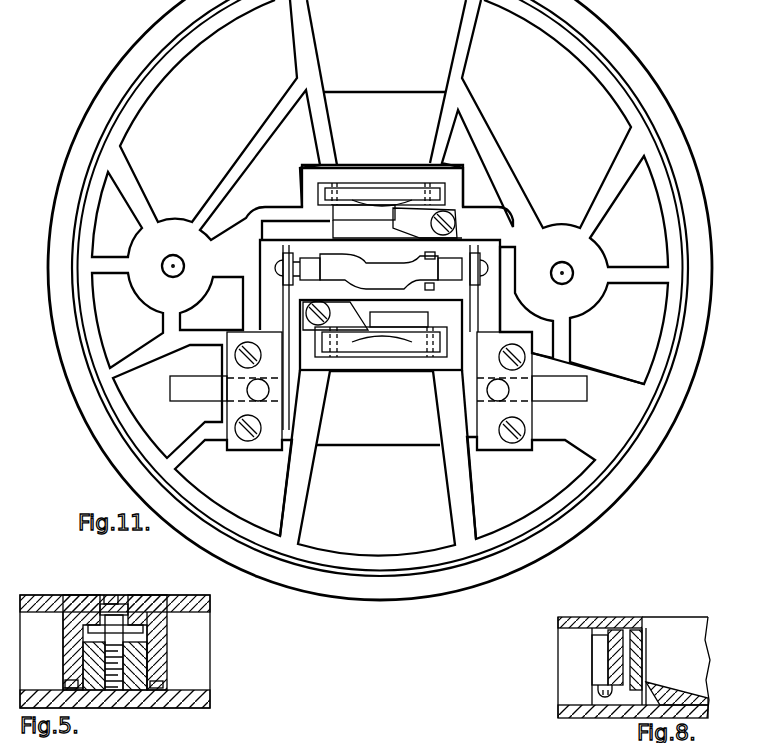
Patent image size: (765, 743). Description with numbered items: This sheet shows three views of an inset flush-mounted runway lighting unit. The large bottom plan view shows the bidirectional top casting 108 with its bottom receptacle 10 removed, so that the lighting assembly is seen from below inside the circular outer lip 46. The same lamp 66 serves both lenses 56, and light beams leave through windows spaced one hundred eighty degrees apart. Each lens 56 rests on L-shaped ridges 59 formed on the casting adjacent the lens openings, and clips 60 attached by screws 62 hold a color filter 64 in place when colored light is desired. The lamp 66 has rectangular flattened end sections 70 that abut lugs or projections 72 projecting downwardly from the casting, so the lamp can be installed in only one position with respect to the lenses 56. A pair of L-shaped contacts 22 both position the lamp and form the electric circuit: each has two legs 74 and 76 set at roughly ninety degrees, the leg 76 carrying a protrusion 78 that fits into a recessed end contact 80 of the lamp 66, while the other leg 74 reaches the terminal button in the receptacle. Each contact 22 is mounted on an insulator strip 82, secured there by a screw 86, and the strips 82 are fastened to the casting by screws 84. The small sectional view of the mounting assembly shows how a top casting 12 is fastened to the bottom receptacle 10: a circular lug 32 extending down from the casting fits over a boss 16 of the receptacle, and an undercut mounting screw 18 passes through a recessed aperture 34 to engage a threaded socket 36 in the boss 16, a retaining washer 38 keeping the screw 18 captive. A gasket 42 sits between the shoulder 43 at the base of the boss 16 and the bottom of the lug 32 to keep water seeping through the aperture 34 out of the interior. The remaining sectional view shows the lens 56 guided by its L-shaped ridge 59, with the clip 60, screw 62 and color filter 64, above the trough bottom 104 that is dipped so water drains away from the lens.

In FIG. 5, the bottom receptacle 10 is at (153, 697).
In FIG. 8, the bottom receptacle 10 is at (617, 716).
In FIG. 5, the top casting 12 is at (60, 594).
In FIG. 8, the top casting 12 is at (584, 616).
In FIG. 5, the bosses 16 is at (90, 665).
In FIG. 5, the mounting screws 18 is at (107, 594).
In FIG. 11, the contacts 22 is at (170, 384).
In FIG. 5, the circular lugs 32 is at (65, 628).
In FIG. 11, the aperture 34 is at (557, 279).
In FIG. 5, the aperture 34 is at (133, 610).
In FIG. 5, the threaded socket 36 is at (122, 668).
In FIG. 5, the retaining washer 38 is at (150, 629).
In FIG. 5, the gasket 42 is at (62, 680).
In FIG. 5, the shoulder 43 is at (66, 693).
In FIG. 11, the outer lip 46 is at (48, 280).
In FIG. 11, the lens 56 is at (386, 183).
In FIG. 8, the lens 56 is at (641, 681).
In FIG. 11, the L-shaped ridges 59 is at (333, 184).
In FIG. 8, the L-shaped ridges 59 is at (645, 653).
In FIG. 11, the clips 60 is at (440, 206).
In FIG. 8, the clips 60 is at (602, 680).
In FIG. 11, the screws 62 is at (456, 222).
In FIG. 8, the screws 62 is at (598, 691).
In FIG. 11, the color filter 64 is at (342, 212).
In FIG. 8, the color filter 64 is at (612, 649).
In FIG. 11, the lamp 66 is at (365, 257).
In FIG. 11, the flattened end sections 70 is at (313, 258).
In FIG. 11, the lugs or projections 72 is at (435, 255).
In FIG. 11, the leg 74 is at (195, 400).
In FIG. 11, the leg 76 is at (470, 310).
In FIG. 11, the protrusion 78 is at (292, 258).
In FIG. 11, the recessed end contacts 80 is at (319, 281).
In FIG. 11, the insulator strip 82 is at (268, 449).
In FIG. 11, the screws 84 is at (508, 445).
In FIG. 11, the screw 86 is at (255, 383).
In FIG. 8, the trough bottom 104 is at (690, 690).
In FIG. 11, the top casting 108 is at (178, 72).